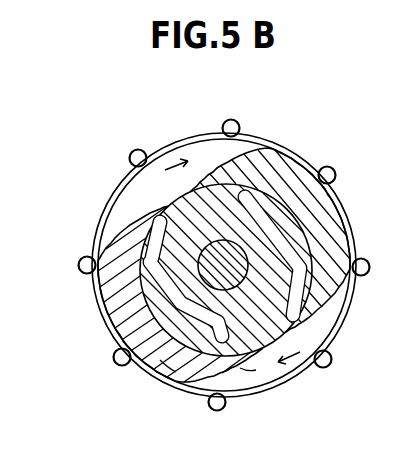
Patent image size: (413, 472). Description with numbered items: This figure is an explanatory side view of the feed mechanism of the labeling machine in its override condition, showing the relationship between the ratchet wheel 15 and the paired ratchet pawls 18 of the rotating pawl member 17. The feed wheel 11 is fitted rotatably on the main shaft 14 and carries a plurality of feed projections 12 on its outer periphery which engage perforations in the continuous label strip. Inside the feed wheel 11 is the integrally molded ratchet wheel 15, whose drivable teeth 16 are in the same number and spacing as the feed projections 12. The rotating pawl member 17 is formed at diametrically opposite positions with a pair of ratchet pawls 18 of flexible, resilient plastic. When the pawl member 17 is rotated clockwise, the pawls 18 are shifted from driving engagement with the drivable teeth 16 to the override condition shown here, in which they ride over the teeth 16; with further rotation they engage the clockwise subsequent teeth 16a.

The feed wheel 11 is at (278, 146).
The feed projections 12 is at (326, 166).
The main shaft 14 is at (247, 375).
The ratchet wheel 15 is at (166, 370).
The drivable teeth 16 is at (300, 262).
The clockwise subsequent teeth 16a is at (292, 318).
The rotating pawl member 17 is at (322, 221).
The ratchet pawls 18 is at (158, 200).